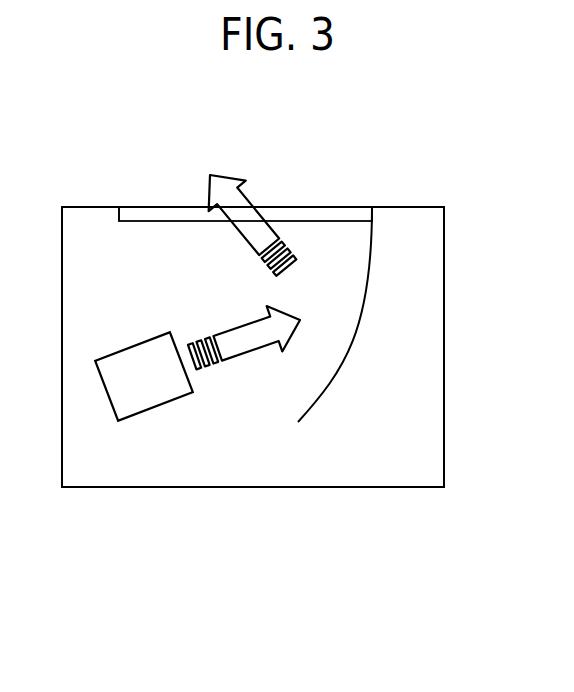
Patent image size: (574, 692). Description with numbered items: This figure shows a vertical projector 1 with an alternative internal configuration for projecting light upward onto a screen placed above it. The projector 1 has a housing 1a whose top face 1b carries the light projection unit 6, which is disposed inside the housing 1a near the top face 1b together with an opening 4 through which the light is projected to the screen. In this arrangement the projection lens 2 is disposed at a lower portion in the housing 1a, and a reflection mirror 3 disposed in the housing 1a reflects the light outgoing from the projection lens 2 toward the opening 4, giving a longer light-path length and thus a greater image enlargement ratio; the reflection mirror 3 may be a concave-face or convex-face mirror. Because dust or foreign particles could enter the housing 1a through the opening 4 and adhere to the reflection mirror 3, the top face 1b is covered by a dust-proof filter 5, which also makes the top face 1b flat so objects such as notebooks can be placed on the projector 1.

The projector 1 is at (281, 282).
The housing 1a is at (444, 292).
The top face 1b is at (408, 184).
The projection lens 2 is at (155, 410).
The reflection mirror 3 is at (340, 362).
The opening 4 is at (118, 219).
The dust-proof filter 5 is at (311, 198).
The light projection unit 6 is at (177, 206).